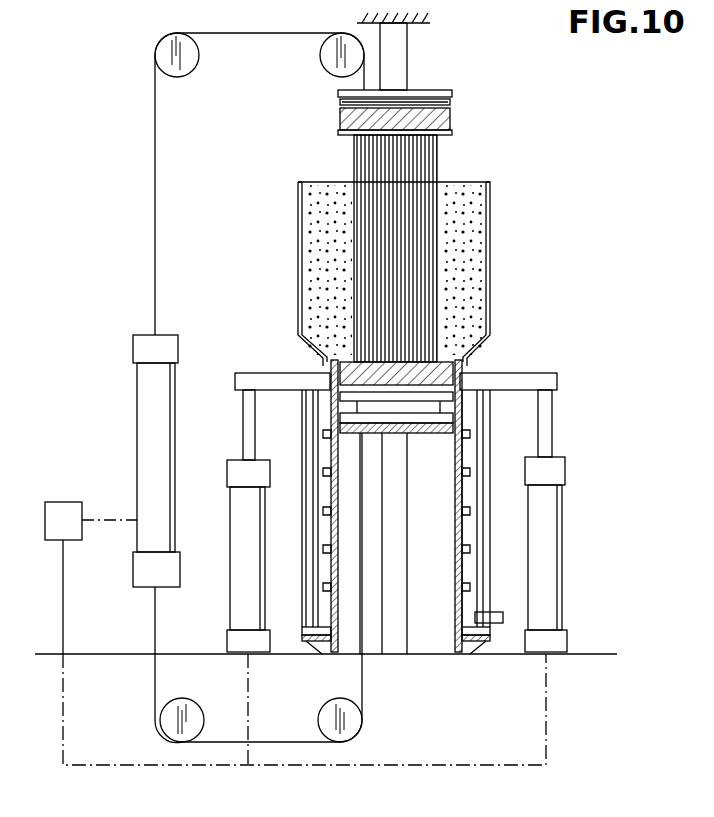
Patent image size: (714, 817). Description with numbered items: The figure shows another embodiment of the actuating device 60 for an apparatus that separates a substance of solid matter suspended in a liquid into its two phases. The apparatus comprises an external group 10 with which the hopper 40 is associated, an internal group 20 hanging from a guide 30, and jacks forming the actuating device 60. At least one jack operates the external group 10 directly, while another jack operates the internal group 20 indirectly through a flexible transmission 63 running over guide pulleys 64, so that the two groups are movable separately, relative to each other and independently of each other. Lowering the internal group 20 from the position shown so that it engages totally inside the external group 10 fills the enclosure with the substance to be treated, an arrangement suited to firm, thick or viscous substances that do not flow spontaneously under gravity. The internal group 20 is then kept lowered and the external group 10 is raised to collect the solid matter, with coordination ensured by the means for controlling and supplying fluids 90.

The external group 10 is at (496, 474).
The internal group 20 is at (437, 160).
The guide 30 is at (424, 72).
The hopper 40 is at (490, 296).
The actuating device 60 is at (226, 575).
The flexible transmission 63 is at (143, 168).
The guide pulleys 64 is at (326, 52).
The means for controlling and supplying fluids 90 is at (60, 508).